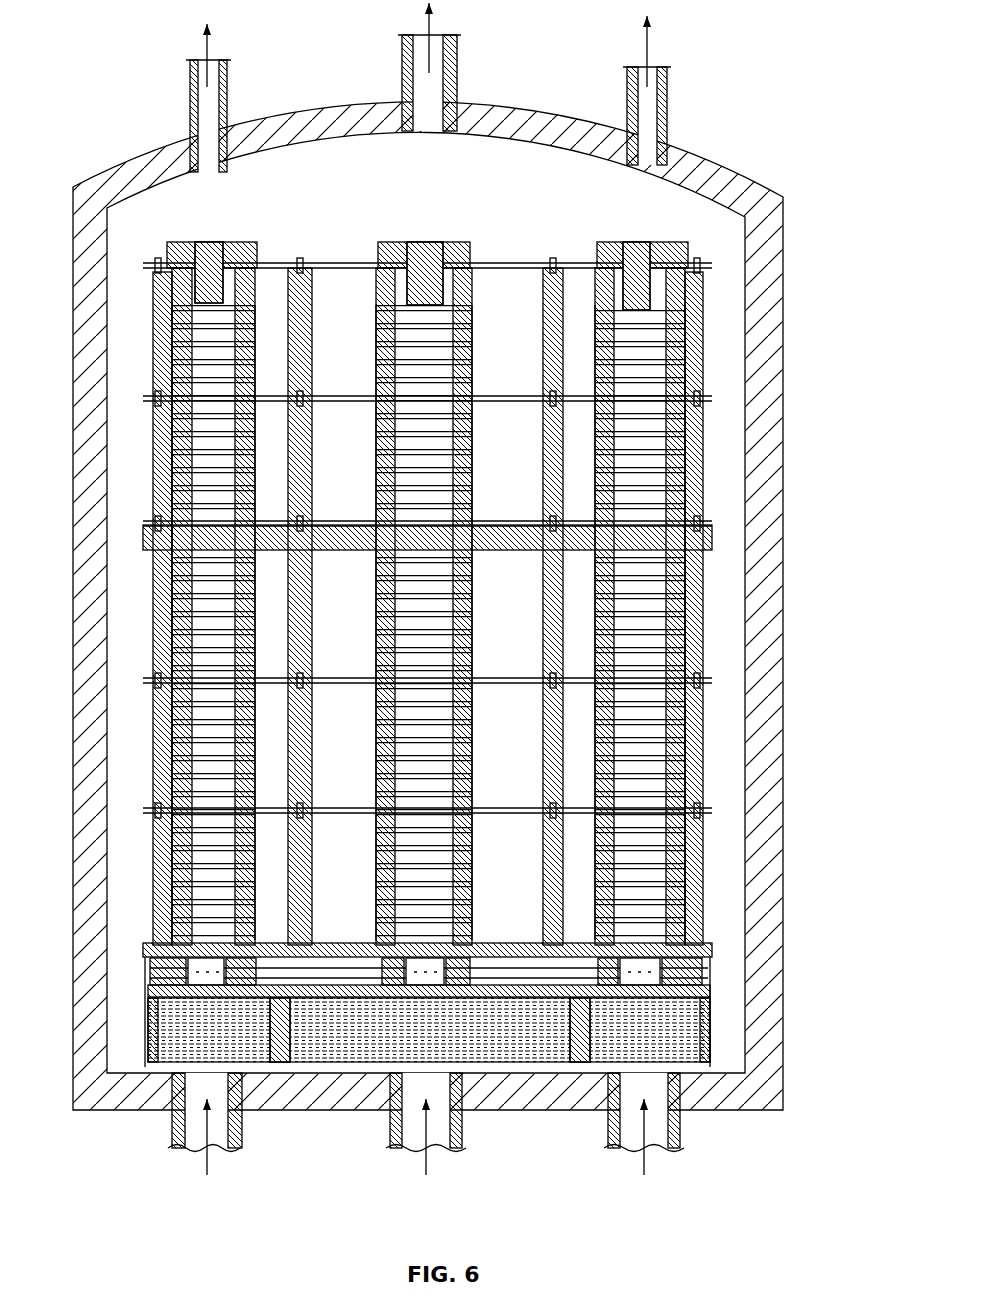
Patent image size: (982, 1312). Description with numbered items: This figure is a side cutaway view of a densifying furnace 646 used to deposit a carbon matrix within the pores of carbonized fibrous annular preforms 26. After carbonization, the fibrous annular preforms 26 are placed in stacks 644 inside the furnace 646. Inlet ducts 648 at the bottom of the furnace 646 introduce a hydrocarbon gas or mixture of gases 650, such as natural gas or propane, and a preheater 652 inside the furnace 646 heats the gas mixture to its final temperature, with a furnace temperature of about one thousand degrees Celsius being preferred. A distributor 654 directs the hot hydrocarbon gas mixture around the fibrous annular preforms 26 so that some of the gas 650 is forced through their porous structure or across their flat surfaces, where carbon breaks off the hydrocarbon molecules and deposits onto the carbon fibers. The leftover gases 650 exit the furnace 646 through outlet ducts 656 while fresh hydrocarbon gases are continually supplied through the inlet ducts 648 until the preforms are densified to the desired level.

The densifying furnace 646 is at (136, 165).
The outlet ducts 656 is at (230, 86).
The stacks 644 is at (258, 305).
The fibrous annular preforms 26 is at (377, 365).
The hydrocarbon gas or mixture of gases 650 is at (720, 467).
The distributor 654 is at (150, 972).
The preheater 652 is at (714, 1025).
The inlet ducts 648 is at (244, 1131).